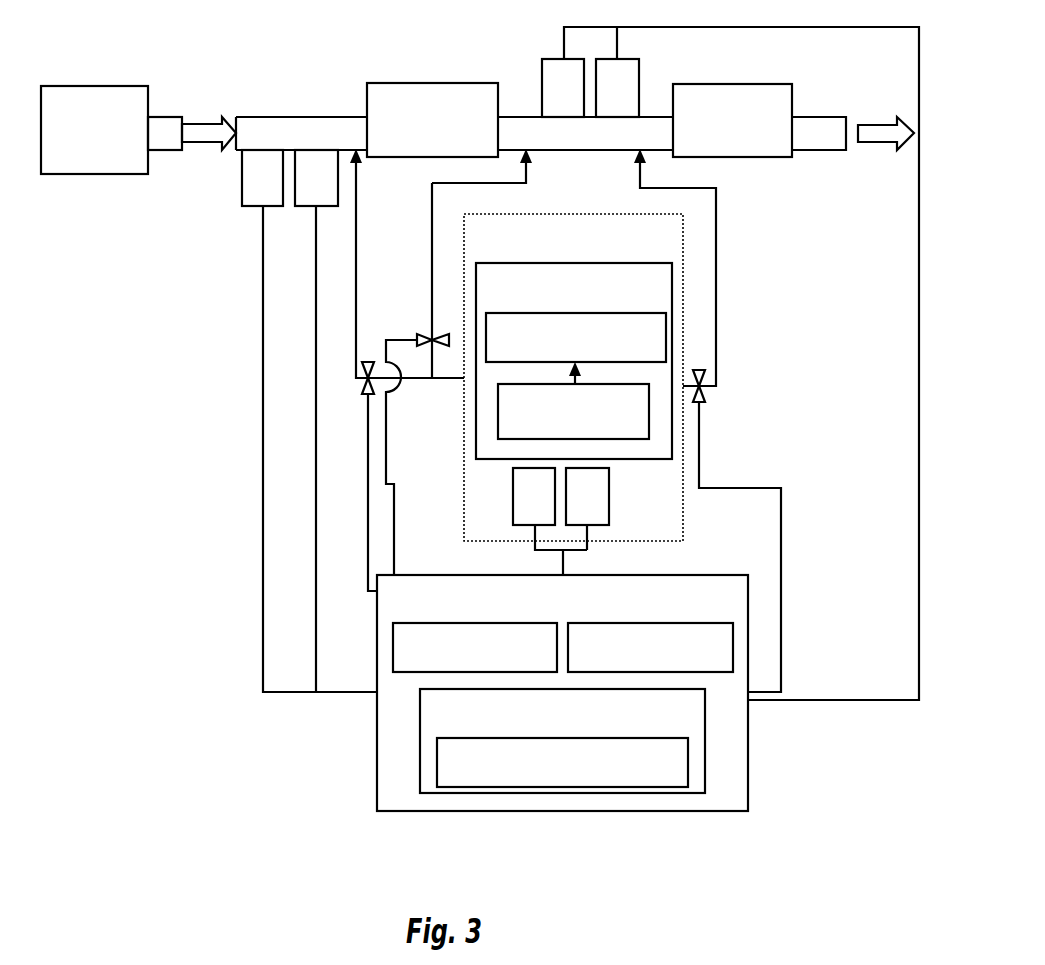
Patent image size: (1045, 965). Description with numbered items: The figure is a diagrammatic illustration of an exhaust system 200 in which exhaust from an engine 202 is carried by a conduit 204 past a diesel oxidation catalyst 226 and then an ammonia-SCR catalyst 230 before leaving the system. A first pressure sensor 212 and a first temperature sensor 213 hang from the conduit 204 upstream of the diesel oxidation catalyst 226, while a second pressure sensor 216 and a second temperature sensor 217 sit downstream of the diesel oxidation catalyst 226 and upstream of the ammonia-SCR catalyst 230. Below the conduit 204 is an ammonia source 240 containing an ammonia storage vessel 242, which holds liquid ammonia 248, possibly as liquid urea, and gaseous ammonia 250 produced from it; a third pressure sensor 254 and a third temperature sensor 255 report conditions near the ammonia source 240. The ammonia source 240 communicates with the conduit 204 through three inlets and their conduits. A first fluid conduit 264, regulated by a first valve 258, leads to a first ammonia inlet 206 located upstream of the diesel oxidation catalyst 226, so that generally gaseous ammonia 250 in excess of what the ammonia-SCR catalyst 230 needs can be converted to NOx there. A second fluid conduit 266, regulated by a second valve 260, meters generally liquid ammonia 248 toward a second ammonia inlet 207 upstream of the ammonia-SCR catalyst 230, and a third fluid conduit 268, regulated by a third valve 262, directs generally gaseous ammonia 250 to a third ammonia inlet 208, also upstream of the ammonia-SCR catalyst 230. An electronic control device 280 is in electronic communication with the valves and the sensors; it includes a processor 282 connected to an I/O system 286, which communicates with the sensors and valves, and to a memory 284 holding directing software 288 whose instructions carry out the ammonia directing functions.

The exhaust system 200 is at (100, 68).
The engine 202 is at (94, 130).
The conduit 204 is at (208, 92).
The first ammonia inlet 206 is at (358, 166).
The second ammonia inlet 207 is at (637, 158).
The third ammonia inlet 208 is at (530, 153).
The first pressure sensor 212 is at (309, 421).
The first temperature sensor 213 is at (316, 421).
The second pressure sensor 216 is at (730, 363).
The second temperature sensor 217 is at (617, 72).
The diesel oxidation catalyst 226 is at (432, 120).
The ammonia-SCR catalyst 230 is at (732, 120).
The ammonia source 240 is at (573, 394).
The ammonia storage vessel 242 is at (574, 361).
The liquid ammonia 248 is at (573, 400).
The gaseous ammonia 250 is at (576, 337).
The third pressure sensor 254 is at (550, 521).
The third temperature sensor 255 is at (587, 509).
The first valve 258 is at (367, 396).
The second valve 260 is at (700, 406).
The third valve 262 is at (419, 338).
The first fluid conduit 264 is at (361, 364).
The second fluid conduit 266 is at (706, 388).
The third fluid conduit 268 is at (432, 240).
The electronic control device 280 is at (562, 693).
The processor 282 is at (475, 647).
The memory 284 is at (562, 741).
The I/O system 286 is at (650, 647).
The directing software 288 is at (562, 762).